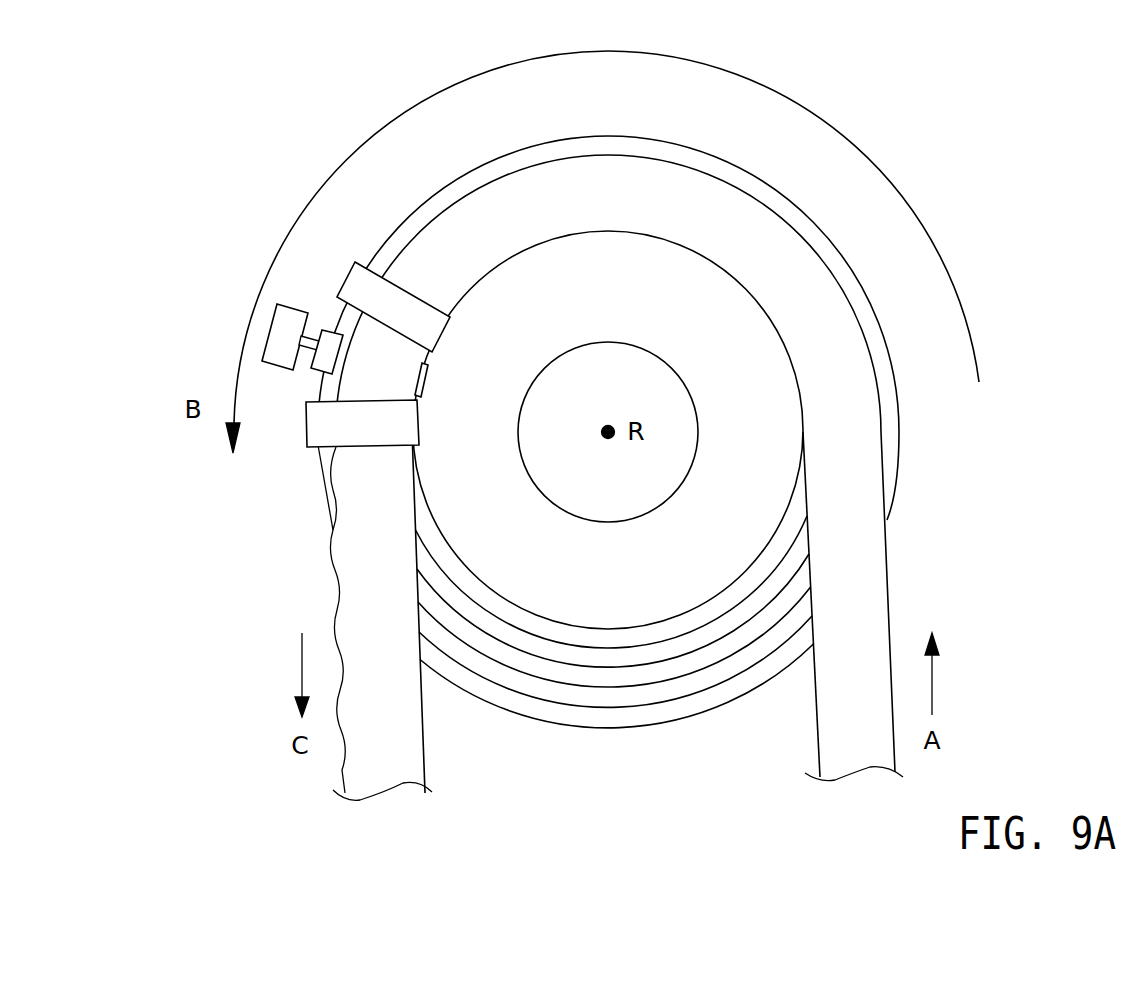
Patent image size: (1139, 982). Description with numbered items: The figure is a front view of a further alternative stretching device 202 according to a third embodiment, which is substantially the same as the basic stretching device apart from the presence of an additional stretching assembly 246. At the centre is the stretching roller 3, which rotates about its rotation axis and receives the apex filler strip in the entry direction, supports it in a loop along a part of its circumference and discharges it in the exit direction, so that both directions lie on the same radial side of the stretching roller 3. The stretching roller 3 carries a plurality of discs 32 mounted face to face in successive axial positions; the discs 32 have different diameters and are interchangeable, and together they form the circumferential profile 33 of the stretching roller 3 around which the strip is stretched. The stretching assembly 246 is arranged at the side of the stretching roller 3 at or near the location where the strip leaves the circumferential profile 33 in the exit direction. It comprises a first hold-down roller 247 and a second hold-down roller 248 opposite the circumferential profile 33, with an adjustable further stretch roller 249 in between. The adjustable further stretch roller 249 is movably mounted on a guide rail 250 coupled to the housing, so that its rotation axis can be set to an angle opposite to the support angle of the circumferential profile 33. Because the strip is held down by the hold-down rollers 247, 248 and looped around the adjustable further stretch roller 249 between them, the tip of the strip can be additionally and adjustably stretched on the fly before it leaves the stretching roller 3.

The further alternative stretching device 202 is at (978, 137).
The stretching assembly 246 is at (377, 323).
The stretching roller 3 is at (792, 203).
The first hold-down roller 247 is at (437, 330).
The second hold-down roller 248 is at (403, 427).
The adjustable further stretch roller 249 is at (427, 378).
The guide rail 250 is at (281, 355).
The circumferential profile 33 is at (475, 612).
The discs 32 is at (717, 612).